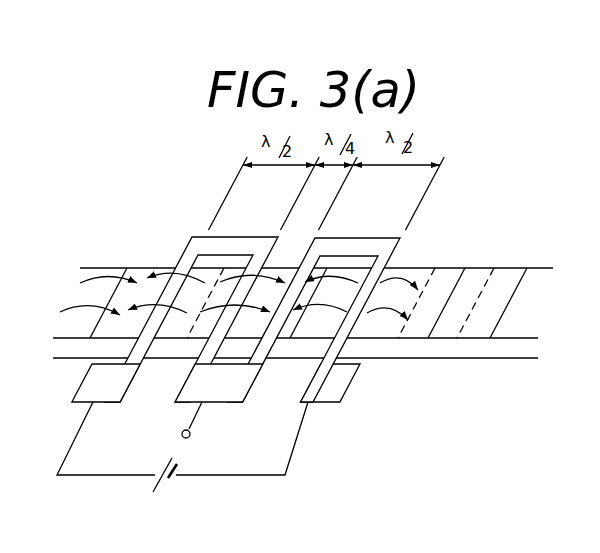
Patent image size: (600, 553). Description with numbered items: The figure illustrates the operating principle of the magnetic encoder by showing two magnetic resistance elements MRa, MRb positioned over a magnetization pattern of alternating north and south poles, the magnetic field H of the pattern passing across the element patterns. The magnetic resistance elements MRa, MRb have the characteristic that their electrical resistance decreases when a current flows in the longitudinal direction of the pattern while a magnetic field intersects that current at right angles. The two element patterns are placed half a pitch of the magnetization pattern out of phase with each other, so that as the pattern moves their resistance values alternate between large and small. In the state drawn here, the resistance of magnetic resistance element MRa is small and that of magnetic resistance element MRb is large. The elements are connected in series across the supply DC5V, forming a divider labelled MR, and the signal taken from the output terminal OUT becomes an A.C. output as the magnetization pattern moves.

The magnetoresistive element / magnet strip MR is at (343, 402).
The magnetic resistance element MRa is at (175, 306).
The magnetic resistance element MRb is at (314, 306).
The magnetic field H is at (237, 296).
The output terminal OUT is at (215, 427).
The DC 5V power supply DC5V is at (182, 463).